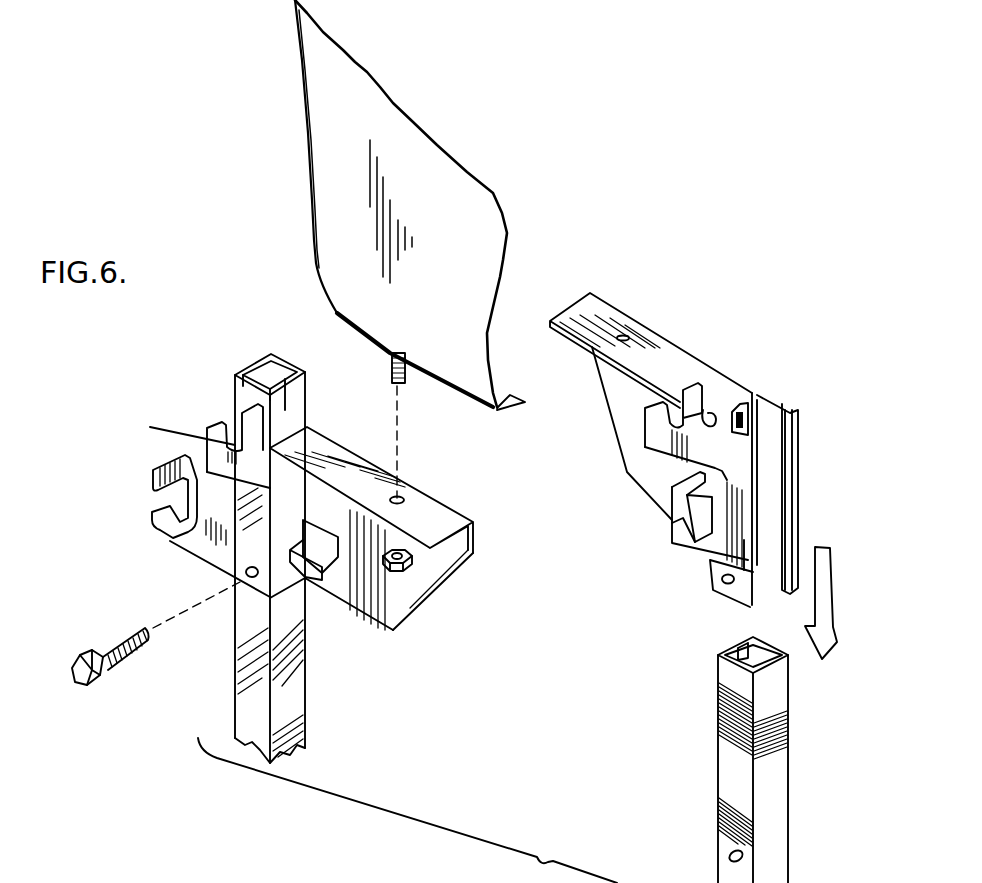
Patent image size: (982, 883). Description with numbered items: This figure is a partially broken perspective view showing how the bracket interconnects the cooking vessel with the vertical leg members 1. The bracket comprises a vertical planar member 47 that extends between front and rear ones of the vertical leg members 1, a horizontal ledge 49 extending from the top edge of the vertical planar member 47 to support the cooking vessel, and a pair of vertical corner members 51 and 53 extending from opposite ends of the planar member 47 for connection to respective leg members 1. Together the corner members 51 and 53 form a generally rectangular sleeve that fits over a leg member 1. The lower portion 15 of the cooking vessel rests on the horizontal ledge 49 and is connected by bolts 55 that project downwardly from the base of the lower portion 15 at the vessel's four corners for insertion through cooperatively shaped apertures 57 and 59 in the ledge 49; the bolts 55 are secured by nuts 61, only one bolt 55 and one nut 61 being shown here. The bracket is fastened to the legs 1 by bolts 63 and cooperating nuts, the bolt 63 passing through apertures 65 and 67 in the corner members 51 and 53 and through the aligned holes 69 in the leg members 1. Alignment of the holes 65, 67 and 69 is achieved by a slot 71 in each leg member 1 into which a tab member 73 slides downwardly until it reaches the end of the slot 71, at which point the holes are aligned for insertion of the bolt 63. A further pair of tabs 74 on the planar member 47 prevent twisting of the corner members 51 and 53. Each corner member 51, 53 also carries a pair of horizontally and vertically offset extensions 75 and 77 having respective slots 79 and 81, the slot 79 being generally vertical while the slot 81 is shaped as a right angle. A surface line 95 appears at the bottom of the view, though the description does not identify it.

The vertical leg member 1 is at (290, 655).
The lower portion of cooking vessel 15 is at (330, 160).
The vertical planar member 47 is at (410, 612).
The horizontal ledge 49 is at (448, 520).
The vertical corner member 51 is at (168, 591).
The vertical corner member 53 is at (815, 455).
The bolt 55 is at (392, 367).
The aperture 57 is at (405, 498).
The aperture 59 is at (628, 335).
The nut 61 is at (412, 566).
The bolt 63 is at (95, 690).
The aperture 65 is at (250, 580).
The aperture 67 is at (763, 567).
The hole 69 is at (728, 852).
The slot 71 is at (288, 403).
The tab member 73 is at (745, 408).
The tab 74 is at (320, 578).
The extension 75 is at (150, 427).
The extension 77 is at (162, 537).
The slot 79 is at (232, 416).
The slot 81 is at (147, 508).
The floor 95 is at (330, 880).